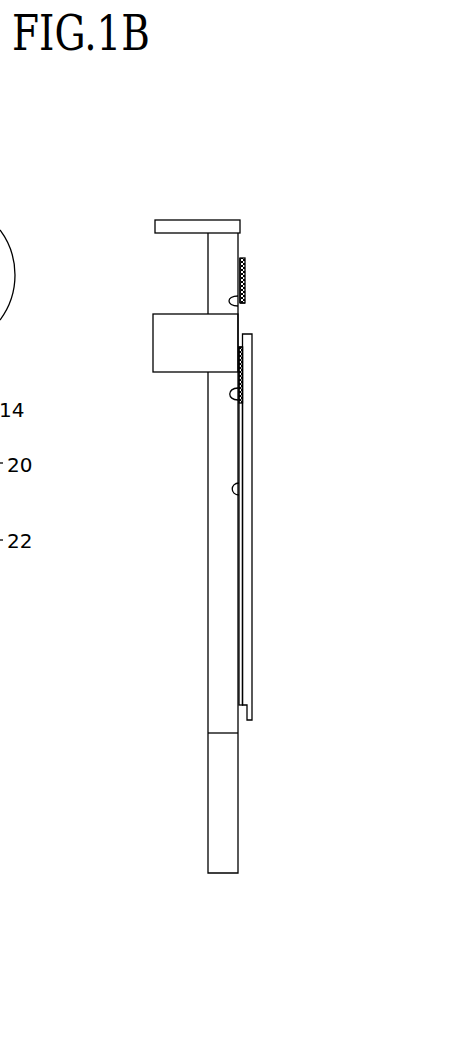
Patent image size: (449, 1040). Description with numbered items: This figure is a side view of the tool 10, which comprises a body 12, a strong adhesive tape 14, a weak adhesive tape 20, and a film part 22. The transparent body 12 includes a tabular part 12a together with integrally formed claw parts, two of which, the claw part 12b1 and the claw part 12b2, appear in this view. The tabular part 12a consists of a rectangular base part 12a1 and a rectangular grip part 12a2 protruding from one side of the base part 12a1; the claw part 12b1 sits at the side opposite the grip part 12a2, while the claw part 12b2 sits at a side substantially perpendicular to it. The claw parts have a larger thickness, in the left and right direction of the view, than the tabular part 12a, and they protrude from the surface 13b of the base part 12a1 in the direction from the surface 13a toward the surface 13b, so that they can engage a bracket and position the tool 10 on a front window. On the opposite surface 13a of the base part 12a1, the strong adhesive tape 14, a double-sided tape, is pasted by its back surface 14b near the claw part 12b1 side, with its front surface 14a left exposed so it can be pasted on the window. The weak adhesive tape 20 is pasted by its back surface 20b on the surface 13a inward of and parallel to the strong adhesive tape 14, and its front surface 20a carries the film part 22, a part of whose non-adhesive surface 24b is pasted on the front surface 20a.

The tool 10 is at (128, 225).
The body 12 is at (208, 465).
The tabular part 12a is at (118, 742).
The base part 12a1 is at (215, 708).
The grip part 12a2 is at (215, 803).
The claw part 12b1 is at (173, 218).
The claw part 12b2 is at (160, 343).
The surface of the base part 13a is at (238, 597).
The other surface of the base part 13b is at (208, 645).
The strong adhesive tape 14 is at (247, 258).
The front surface 14a is at (245, 278).
The back surface 14b is at (242, 309).
The weak adhesive tape 20 is at (243, 353).
The front surface 20a is at (238, 372).
The back surface 20b is at (236, 402).
The film part 22 is at (252, 436).
The other surface of the film 24b is at (238, 488).